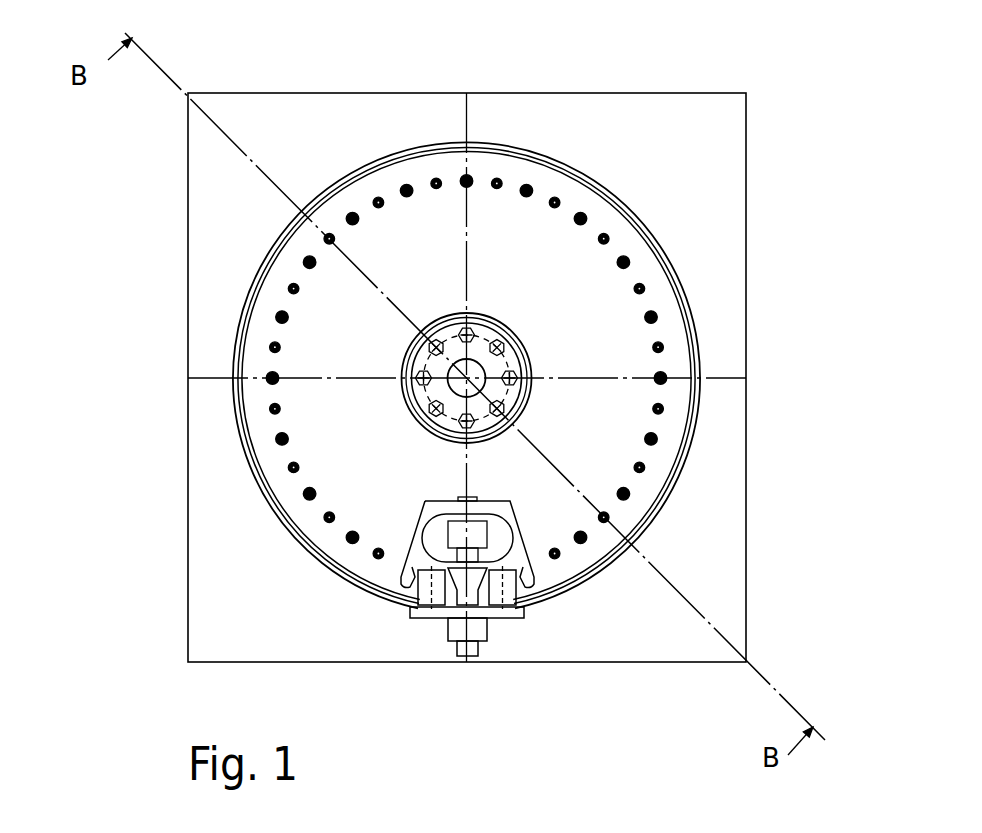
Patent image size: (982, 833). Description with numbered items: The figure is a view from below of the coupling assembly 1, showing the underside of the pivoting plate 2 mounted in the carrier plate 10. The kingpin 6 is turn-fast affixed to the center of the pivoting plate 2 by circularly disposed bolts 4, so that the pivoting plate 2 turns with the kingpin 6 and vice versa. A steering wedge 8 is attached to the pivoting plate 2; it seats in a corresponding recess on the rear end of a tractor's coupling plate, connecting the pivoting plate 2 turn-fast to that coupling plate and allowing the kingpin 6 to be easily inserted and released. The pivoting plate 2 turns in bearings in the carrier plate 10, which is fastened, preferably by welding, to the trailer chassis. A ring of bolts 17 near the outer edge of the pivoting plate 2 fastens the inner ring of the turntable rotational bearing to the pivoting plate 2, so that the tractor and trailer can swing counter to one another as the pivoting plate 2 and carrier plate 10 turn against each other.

The coupling assembly 1 is at (643, 71).
The pivoting plate 2 is at (607, 288).
The bolts 4 is at (513, 372).
The kingpin 6 is at (472, 383).
The steering wedge 8 is at (530, 592).
The carrier plate 10 is at (726, 603).
The bolts 17 is at (308, 495).